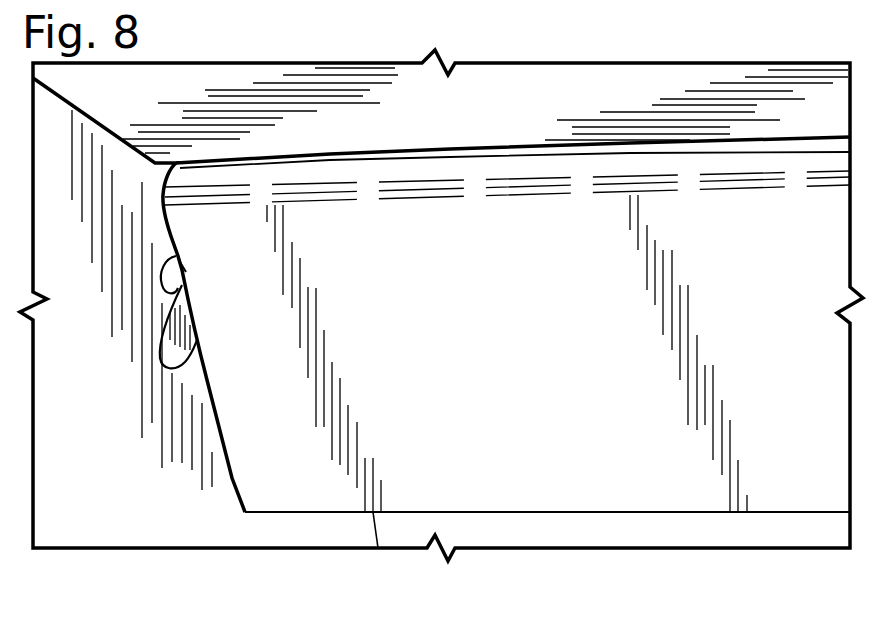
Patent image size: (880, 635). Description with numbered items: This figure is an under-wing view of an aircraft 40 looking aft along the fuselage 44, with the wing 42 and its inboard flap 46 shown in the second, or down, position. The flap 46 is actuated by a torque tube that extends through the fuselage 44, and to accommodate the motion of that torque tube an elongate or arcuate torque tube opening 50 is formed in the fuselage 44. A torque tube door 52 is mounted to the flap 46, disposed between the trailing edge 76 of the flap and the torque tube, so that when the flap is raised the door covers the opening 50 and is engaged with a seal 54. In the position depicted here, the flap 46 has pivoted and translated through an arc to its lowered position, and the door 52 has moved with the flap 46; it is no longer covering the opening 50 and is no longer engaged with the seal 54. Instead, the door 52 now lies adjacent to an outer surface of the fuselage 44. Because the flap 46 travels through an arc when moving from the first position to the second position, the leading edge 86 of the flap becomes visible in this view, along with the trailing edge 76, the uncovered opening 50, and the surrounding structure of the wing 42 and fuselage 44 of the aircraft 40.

The aircraft 40 is at (508, 566).
The wing 42 is at (502, 117).
The fuselage 44 is at (195, 530).
The inboard flap 46 is at (500, 357).
The torque tube opening 50 is at (180, 260).
The torque tube door 52 is at (175, 352).
The seal 54 is at (173, 280).
The trailing edge 76 is at (530, 511).
The leading edge 86 is at (505, 168).